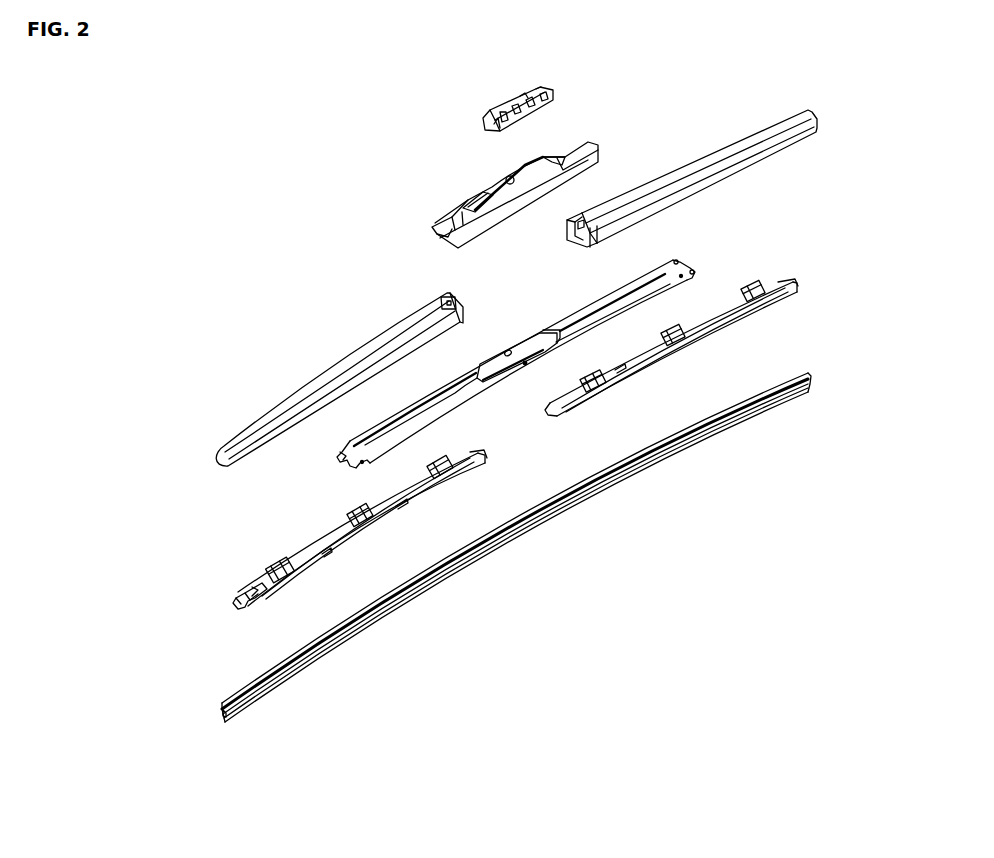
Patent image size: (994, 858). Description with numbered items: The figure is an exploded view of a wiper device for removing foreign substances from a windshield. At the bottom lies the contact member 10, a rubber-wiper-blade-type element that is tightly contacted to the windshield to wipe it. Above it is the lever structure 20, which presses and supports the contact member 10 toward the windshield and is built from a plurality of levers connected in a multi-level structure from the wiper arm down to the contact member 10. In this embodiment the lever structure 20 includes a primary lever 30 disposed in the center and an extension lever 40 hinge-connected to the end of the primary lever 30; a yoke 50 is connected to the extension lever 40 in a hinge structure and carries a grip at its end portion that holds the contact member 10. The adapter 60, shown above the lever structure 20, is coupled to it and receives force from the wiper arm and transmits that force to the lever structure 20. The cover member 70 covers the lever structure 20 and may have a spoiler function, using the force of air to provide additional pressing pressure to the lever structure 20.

The contact member 10 is at (748, 410).
The lever structure 20 is at (162, 511).
The primary lever 30 is at (350, 444).
The extension lever 40 is at (309, 545).
The yoke 50 is at (235, 587).
The adapter 60 is at (577, 147).
The cover member 70 is at (665, 173).